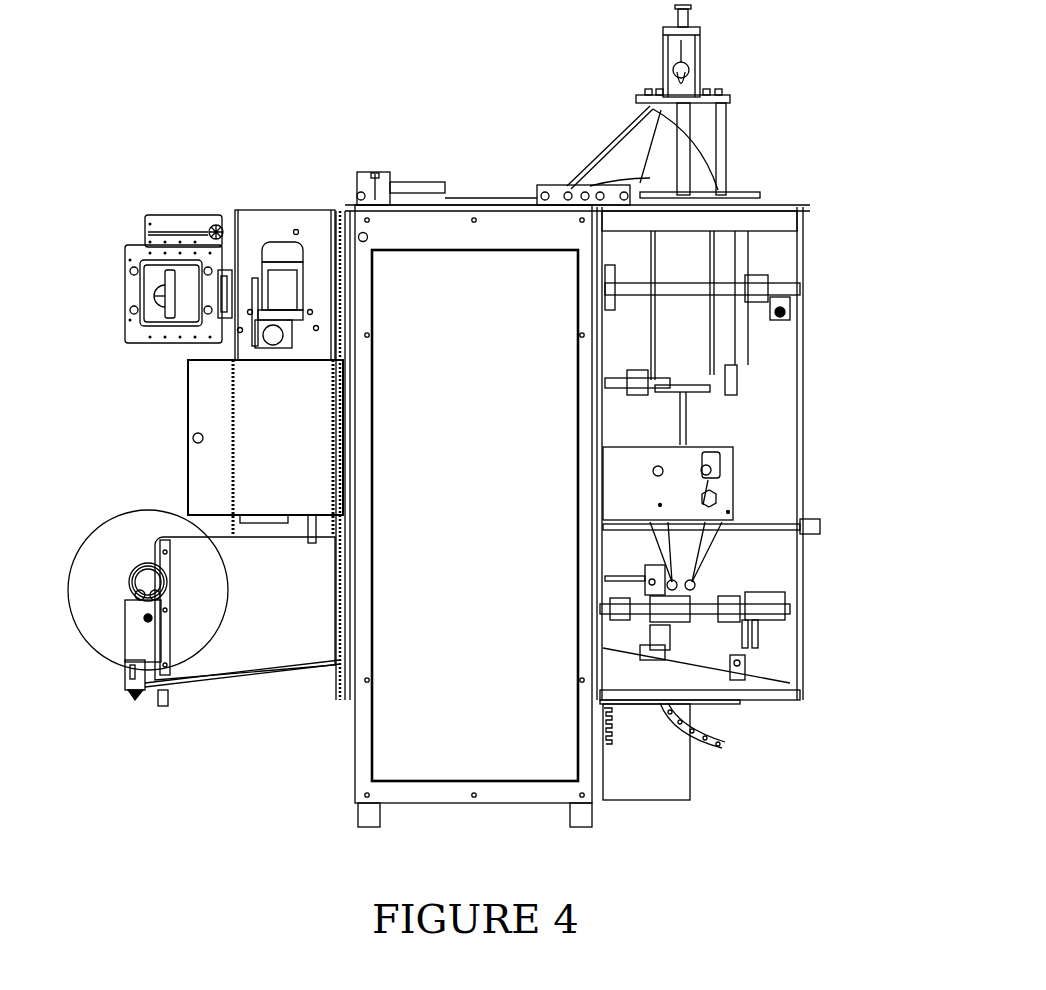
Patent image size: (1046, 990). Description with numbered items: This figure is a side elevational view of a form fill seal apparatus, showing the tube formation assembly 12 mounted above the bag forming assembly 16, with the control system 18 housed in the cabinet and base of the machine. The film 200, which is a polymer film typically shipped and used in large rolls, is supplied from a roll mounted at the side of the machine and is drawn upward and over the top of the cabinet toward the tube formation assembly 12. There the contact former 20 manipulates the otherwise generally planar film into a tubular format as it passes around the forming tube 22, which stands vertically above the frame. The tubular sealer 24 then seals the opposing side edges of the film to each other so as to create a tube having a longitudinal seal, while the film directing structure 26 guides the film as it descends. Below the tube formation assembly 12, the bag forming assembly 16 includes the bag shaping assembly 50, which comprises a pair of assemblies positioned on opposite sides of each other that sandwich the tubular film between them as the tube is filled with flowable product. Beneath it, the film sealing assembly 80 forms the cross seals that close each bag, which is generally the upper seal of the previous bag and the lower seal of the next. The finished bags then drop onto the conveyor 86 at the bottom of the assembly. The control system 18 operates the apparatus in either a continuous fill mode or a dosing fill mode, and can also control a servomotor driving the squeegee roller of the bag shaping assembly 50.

The tube formation assembly 12 is at (752, 62).
The bag forming assembly 16 is at (846, 537).
The control system 18 is at (638, 805).
The contact former 20 is at (600, 150).
The forming tube 22 is at (660, 60).
The tubular sealer 24 is at (760, 352).
The film directing structure 26 is at (716, 455).
The bag shaping assembly 50 is at (745, 483).
The film sealing assembly 80 is at (793, 607).
The conveyor 86 is at (722, 738).
The film 200 is at (88, 622).